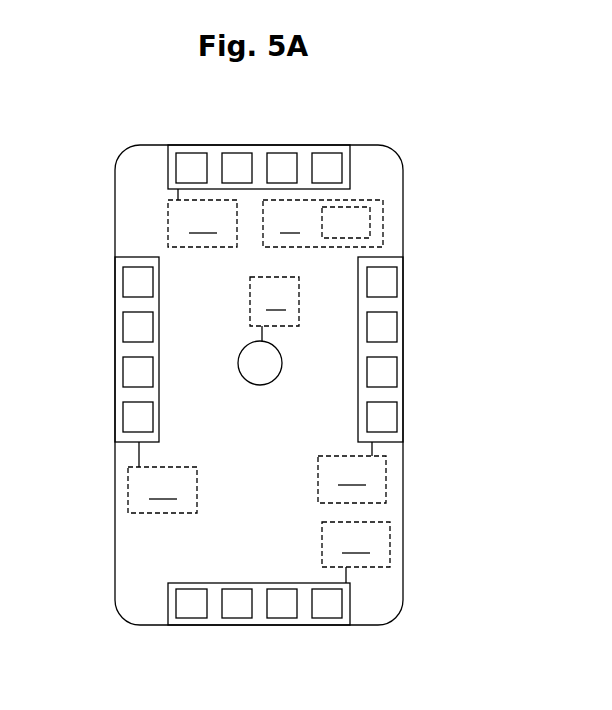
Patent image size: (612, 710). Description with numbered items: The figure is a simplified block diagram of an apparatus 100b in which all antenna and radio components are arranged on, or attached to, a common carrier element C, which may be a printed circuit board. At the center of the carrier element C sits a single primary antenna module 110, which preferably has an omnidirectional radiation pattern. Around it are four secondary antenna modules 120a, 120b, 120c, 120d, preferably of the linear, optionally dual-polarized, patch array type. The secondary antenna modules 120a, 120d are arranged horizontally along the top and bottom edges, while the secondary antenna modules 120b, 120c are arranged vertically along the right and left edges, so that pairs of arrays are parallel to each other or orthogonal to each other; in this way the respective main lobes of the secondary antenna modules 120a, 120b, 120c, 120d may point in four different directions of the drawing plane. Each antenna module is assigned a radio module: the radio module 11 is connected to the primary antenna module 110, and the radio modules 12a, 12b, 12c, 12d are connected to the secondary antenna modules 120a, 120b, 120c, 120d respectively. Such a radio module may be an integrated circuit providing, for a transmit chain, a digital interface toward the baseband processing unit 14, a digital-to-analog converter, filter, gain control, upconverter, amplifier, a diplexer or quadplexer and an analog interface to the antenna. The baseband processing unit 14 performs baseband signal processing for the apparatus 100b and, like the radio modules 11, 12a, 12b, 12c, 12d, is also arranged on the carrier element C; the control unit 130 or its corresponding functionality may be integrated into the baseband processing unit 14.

The apparatus 100b is at (114, 126).
The common carrier element C is at (365, 147).
The secondary antenna module 120a is at (263, 138).
The secondary antenna module 120b is at (348, 390).
The secondary antenna module 120c is at (167, 420).
The secondary antenna module 120d is at (256, 570).
The radio module 12a is at (202, 218).
The radio module 12b is at (352, 472).
The radio module 12c is at (162, 477).
The radio module 12d is at (356, 552).
The baseband processing unit 14 is at (323, 223).
The control unit 130 is at (369, 216).
The radio module 11 is at (274, 309).
The primary antenna module 110 is at (236, 340).